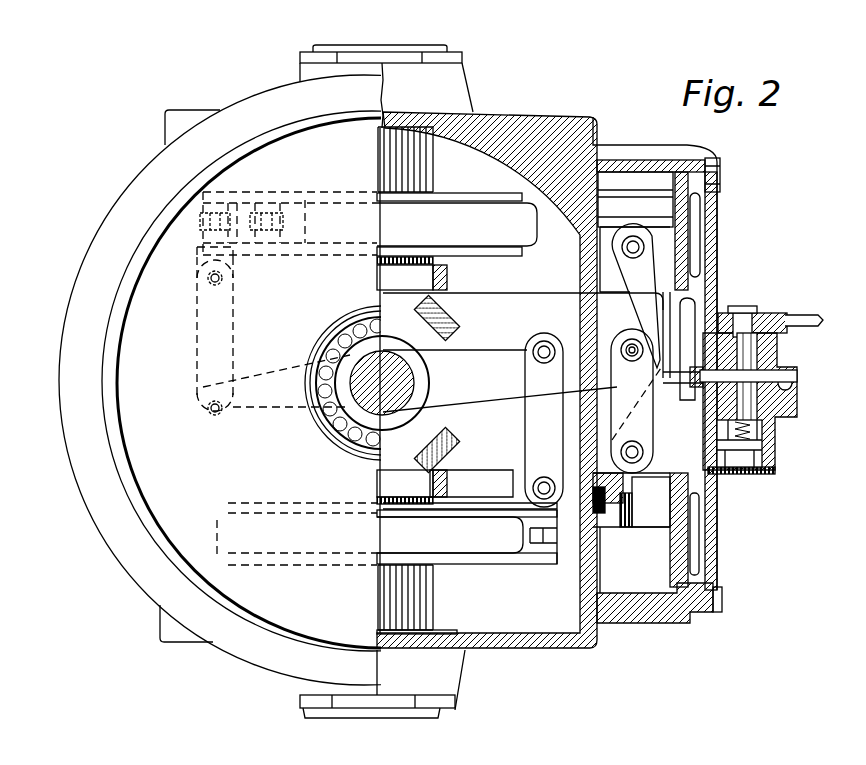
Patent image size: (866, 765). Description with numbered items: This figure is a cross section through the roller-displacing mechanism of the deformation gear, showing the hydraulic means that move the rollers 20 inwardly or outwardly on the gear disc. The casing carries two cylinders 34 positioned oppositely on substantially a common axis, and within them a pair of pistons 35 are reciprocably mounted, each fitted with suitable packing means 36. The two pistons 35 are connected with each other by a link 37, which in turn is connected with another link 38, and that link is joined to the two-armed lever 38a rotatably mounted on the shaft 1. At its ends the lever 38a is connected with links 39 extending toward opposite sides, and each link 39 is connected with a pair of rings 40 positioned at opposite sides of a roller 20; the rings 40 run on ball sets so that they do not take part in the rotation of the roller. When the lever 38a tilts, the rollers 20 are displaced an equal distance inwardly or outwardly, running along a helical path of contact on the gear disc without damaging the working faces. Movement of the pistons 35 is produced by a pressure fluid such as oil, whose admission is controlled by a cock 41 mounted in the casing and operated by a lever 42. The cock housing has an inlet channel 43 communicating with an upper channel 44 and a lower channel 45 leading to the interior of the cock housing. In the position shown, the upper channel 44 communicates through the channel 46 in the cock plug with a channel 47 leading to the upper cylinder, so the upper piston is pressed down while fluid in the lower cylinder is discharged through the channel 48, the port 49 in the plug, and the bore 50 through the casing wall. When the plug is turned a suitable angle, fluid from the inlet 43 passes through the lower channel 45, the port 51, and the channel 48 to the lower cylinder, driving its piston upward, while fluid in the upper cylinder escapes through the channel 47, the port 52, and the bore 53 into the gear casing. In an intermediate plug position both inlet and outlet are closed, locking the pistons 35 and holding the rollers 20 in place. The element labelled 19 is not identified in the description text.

The shaft 1 is at (447, 392).
The laminated core 19 is at (408, 170).
The rollers 20 is at (450, 220).
The cylinders 34 is at (667, 245).
The pistons 35 is at (633, 220).
The packing means 36 is at (582, 545).
The link 37 is at (610, 352).
The link 38 is at (612, 413).
The two-armed lever 38a is at (460, 358).
The links 39 is at (193, 360).
The rings 40 is at (305, 210).
The cock 41 is at (777, 348).
The lever 42 is at (803, 320).
The inlet channel 43 is at (795, 398).
The upper channel 44 is at (790, 370).
The lower channel 45 is at (778, 420).
The channel in cock plug 46 is at (738, 317).
The channel 47 is at (713, 275).
The channel 48 is at (708, 540).
The port 49 is at (719, 474).
The bore 50 is at (670, 385).
The port 51 is at (773, 433).
The port 52 is at (793, 383).
The bore 53 is at (653, 345).